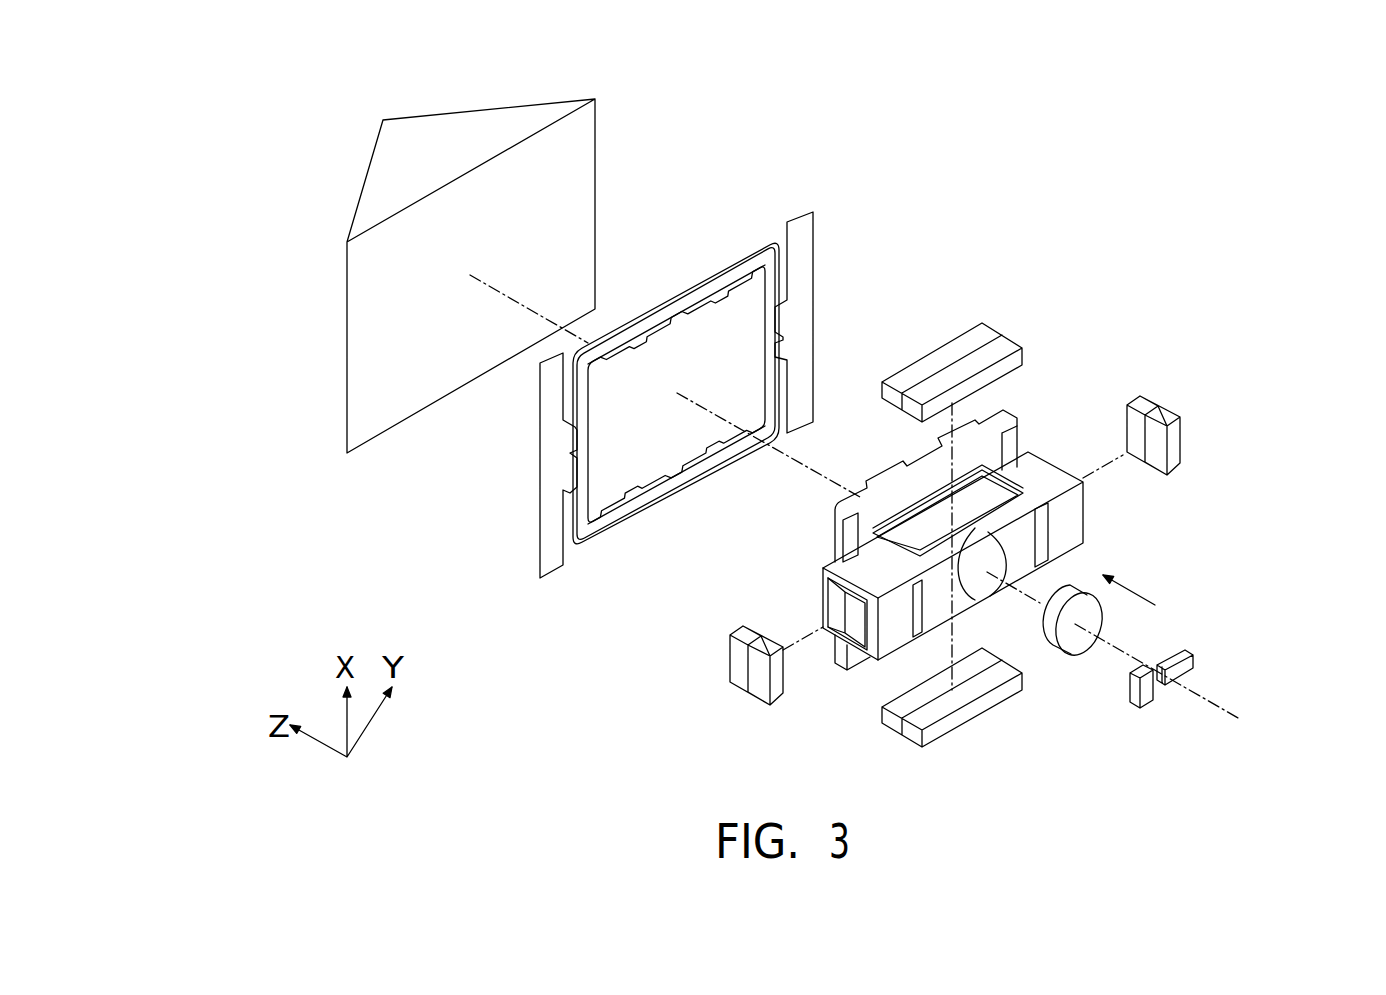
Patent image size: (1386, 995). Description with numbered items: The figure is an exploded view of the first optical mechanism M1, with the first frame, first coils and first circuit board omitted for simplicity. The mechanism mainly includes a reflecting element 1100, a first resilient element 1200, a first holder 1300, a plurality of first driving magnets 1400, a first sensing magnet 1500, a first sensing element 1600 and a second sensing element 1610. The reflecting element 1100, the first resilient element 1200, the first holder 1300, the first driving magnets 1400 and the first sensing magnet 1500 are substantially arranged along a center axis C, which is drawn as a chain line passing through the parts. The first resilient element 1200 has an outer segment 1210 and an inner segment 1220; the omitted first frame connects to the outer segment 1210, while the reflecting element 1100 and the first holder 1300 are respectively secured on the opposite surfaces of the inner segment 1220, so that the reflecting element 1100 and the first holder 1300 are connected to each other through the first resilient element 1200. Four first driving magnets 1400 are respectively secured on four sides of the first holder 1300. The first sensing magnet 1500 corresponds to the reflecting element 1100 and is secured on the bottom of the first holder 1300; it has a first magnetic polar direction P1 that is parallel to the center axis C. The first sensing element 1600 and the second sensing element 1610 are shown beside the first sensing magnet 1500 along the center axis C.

The first optical mechanism M1 is at (190, 69).
The reflecting element 1100 is at (368, 172).
The first resilient element 1200 is at (540, 472).
The outer segment 1210 is at (805, 238).
The inner segment 1220 is at (745, 330).
The first holder 1300 is at (1085, 523).
The first driving magnets 1400 is at (987, 333).
The first sensing magnet 1500 is at (1072, 645).
The first sensing element 1600 is at (1147, 693).
The second sensing element 1610 is at (1187, 667).
The center axis C is at (1230, 717).
The first magnetic polar direction P1 is at (1134, 581).